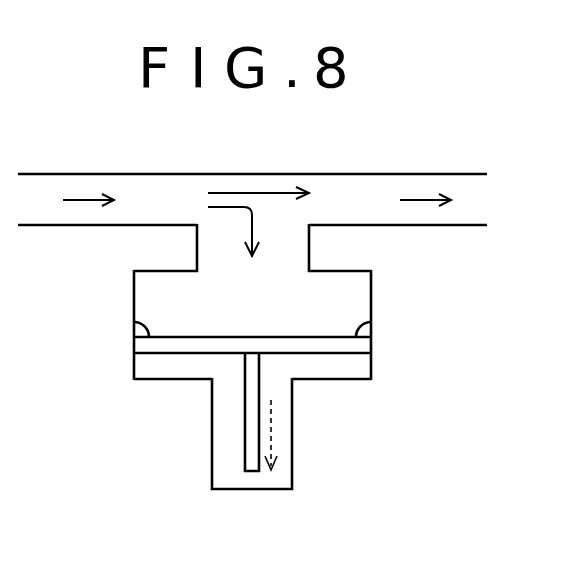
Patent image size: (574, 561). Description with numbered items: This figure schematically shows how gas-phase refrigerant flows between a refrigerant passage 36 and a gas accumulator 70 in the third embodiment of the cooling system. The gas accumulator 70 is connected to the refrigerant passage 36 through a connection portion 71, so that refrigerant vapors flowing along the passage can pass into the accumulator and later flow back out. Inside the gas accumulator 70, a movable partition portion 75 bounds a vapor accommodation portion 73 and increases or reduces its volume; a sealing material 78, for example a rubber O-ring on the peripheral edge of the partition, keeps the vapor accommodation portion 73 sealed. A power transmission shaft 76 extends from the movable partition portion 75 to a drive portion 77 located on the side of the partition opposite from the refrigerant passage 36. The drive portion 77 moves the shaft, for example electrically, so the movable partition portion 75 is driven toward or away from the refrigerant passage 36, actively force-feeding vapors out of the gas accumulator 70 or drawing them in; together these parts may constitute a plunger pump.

The refrigerant passage 36 is at (158, 187).
The gas accumulator 70 is at (265, 356).
The connection portion 71 is at (208, 251).
The vapor accommodation portion 73 is at (148, 289).
The movable partition portion 75 is at (148, 345).
The power transmission shaft 76 is at (243, 427).
The drive portion 77 is at (228, 463).
The sealing material 78 is at (138, 332).